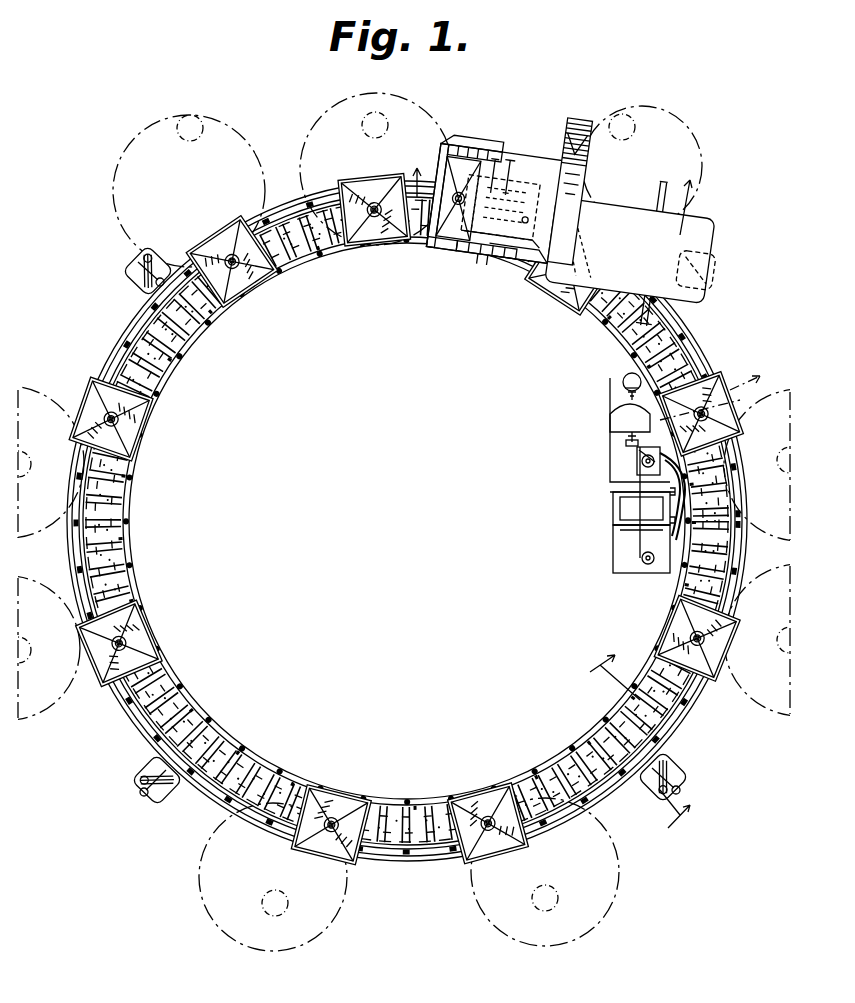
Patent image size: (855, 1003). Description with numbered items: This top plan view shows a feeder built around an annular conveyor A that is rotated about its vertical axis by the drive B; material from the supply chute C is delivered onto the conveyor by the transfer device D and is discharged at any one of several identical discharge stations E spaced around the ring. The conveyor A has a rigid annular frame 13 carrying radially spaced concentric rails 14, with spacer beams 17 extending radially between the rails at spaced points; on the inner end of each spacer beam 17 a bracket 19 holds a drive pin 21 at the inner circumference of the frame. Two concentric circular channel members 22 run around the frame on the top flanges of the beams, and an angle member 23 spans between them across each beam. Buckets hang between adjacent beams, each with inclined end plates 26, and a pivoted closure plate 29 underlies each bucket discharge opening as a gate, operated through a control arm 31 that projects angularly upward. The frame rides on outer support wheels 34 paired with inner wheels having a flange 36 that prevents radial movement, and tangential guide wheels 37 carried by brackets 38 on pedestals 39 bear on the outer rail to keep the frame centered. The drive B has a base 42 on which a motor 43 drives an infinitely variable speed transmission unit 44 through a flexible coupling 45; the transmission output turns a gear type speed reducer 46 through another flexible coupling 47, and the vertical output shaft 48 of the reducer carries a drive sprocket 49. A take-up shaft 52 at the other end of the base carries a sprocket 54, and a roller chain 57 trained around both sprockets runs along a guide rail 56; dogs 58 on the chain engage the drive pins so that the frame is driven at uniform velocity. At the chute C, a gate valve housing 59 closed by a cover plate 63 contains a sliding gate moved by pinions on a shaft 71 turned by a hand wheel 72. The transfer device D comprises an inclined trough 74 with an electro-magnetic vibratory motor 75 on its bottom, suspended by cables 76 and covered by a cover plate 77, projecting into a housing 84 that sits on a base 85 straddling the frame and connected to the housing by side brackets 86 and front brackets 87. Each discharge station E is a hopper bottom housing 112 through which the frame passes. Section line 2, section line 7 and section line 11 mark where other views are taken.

The section line 2- 2 is at (550, 191).
The section line 7- 7 is at (721, 397).
The section line 11- 11 is at (639, 740).
The rigid annular frame 13 is at (246, 741).
The concentric rails 14 is at (160, 670).
The spacer beams 17 is at (105, 367).
The bracket 19 is at (173, 362).
The drive pin 21 is at (170, 370).
The circular channel members 22 is at (160, 293).
The angle member 23 is at (338, 228).
The inclined end plates 26 is at (85, 495).
The closure plate 29 is at (185, 340).
The control arm 31 is at (262, 200).
The outer support wheels 34 is at (268, 215).
The flange 36 is at (296, 262).
The tangential guide wheels 37 is at (162, 255).
The brackets 38 is at (138, 272).
The pedestals 39 is at (140, 262).
The base 42 is at (614, 563).
The motor 43 is at (622, 382).
The infinitely variable speed transmission unit 44 is at (612, 418).
The flexible coupling 45 is at (628, 392).
The gear type speed reducer 46 is at (637, 461).
The flexible coupling 47 is at (630, 435).
The output shaft 48 is at (626, 443).
The drive sprocket 49 is at (612, 470).
The take-up shaft 52 is at (650, 565).
The sprocket 54 is at (640, 565).
The guide rail 56 is at (680, 498).
The roller chain 57 is at (622, 512).
The driving dogs 58 is at (618, 533).
The gate valve housing 59 is at (518, 268).
The cover plate 63 is at (488, 245).
The shaft 71 is at (525, 178).
The hand wheel 72 is at (485, 170).
The trough 74 is at (557, 170).
The electro-magnetic vibratory motor 75 is at (612, 197).
The cables 76 is at (505, 178).
The cover plate 77 is at (500, 262).
The housing 84 is at (450, 262).
The base 85 is at (425, 250).
The brackets 86 is at (460, 152).
The brackets 87 is at (447, 158).
The hopper bottom housing 112 is at (372, 185).
The annular conveyor A is at (218, 724).
The drive B is at (605, 501).
The supply chute C is at (564, 123).
The transfer device D is at (462, 244).
The discharge stations E is at (216, 233).